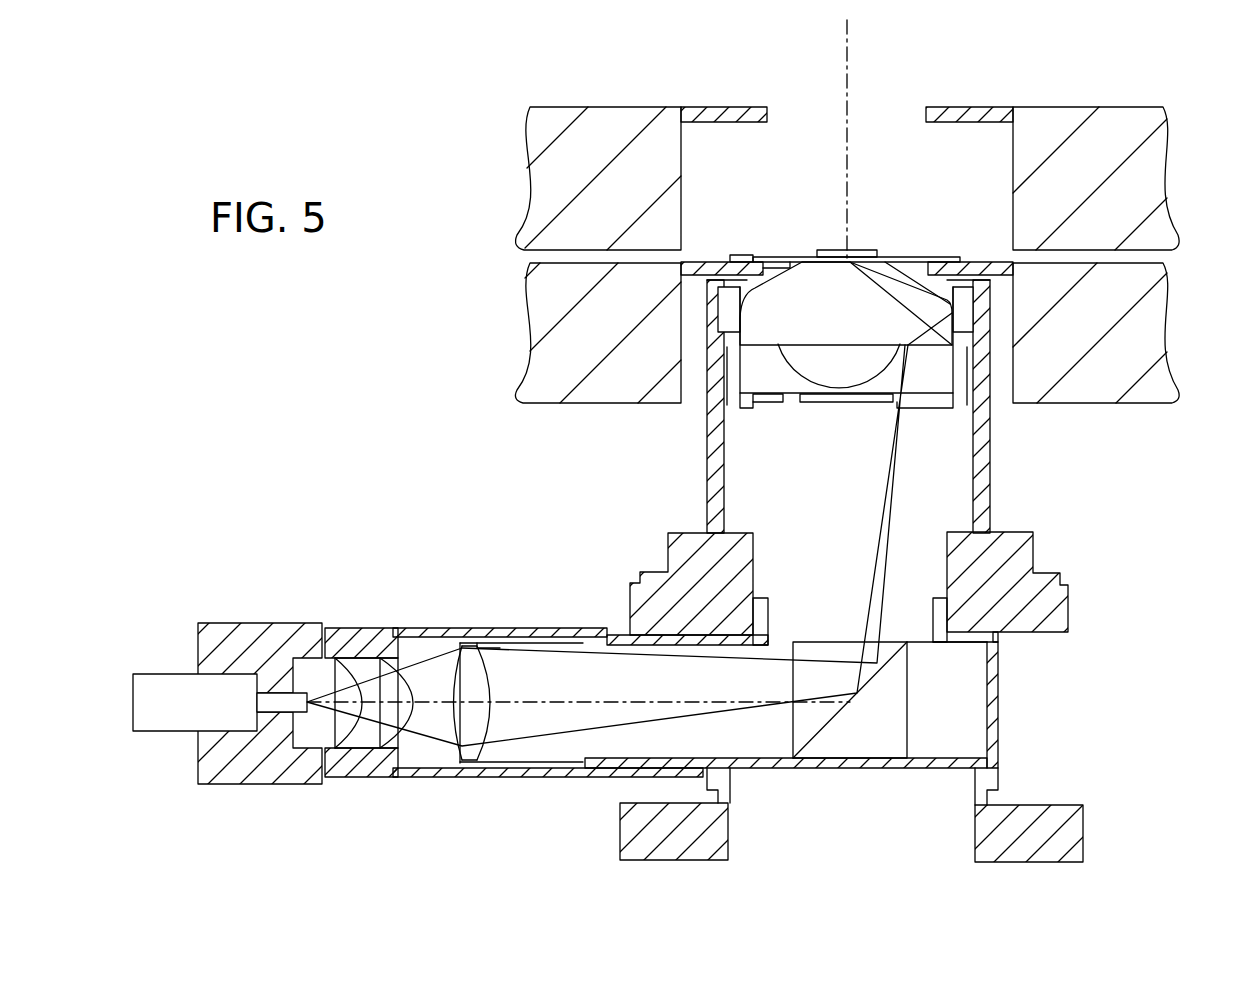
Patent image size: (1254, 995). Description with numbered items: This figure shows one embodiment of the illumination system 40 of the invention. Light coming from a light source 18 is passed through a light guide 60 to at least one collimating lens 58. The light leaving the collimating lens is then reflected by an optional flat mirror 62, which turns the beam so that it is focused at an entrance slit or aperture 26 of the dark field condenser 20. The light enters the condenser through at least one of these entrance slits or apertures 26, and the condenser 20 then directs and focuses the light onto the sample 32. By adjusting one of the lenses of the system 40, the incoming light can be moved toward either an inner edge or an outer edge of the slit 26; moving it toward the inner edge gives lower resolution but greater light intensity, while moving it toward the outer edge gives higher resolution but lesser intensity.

The light source 18 is at (165, 672).
The dark field condenser 20 is at (790, 300).
The entrance slit or aperture 26 is at (893, 414).
The sample 32 is at (855, 253).
The illumination system 40 is at (1226, 173).
The collimating lens 58 is at (413, 688).
The light guide 60 is at (272, 690).
The flat mirror 62 is at (850, 718).